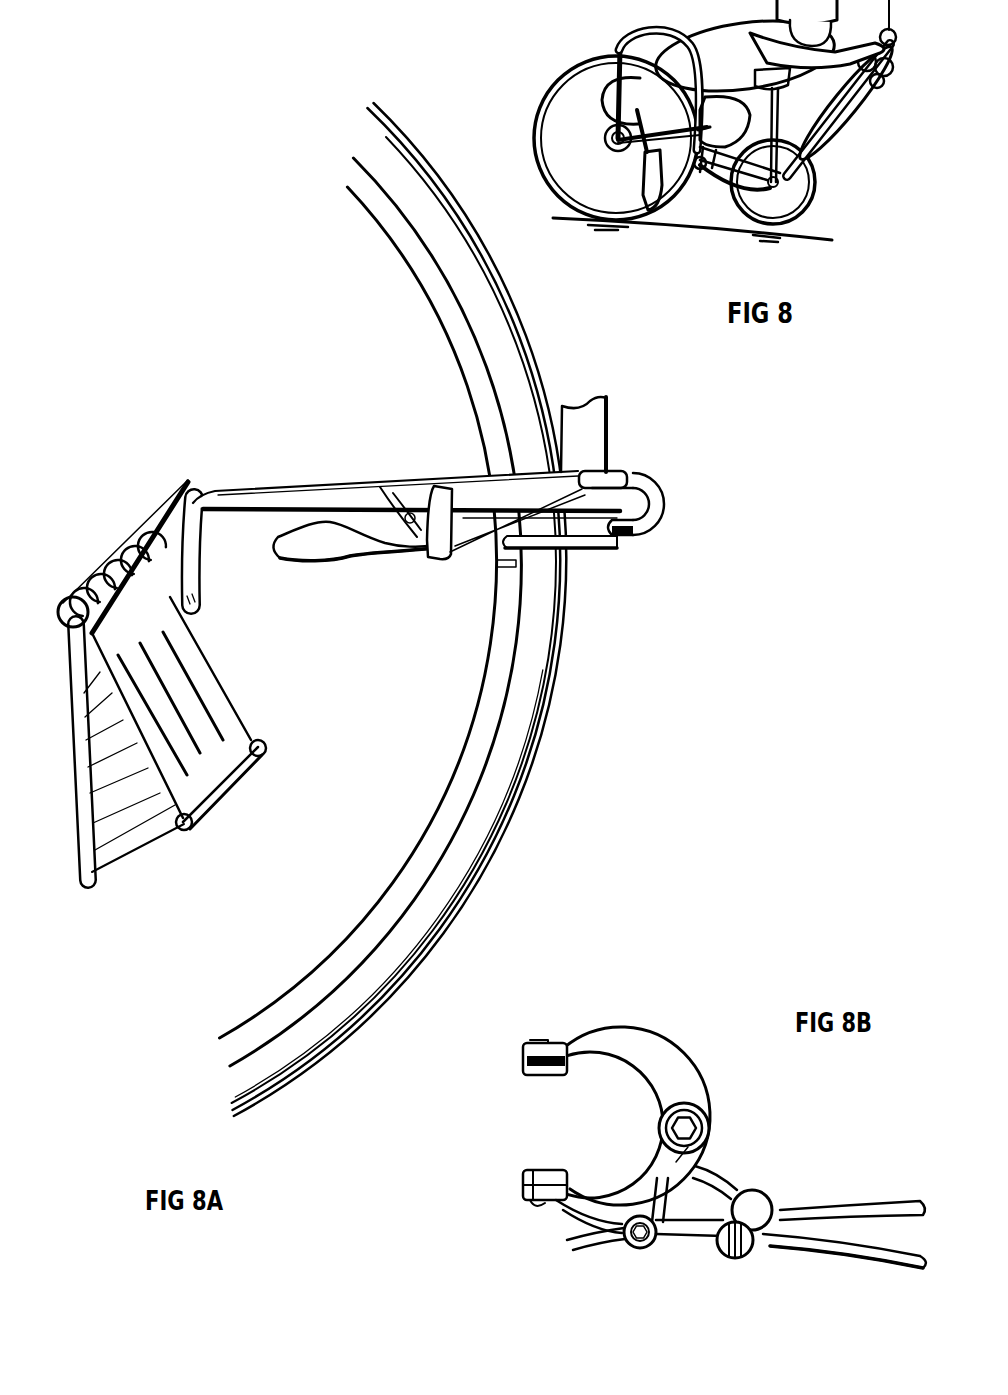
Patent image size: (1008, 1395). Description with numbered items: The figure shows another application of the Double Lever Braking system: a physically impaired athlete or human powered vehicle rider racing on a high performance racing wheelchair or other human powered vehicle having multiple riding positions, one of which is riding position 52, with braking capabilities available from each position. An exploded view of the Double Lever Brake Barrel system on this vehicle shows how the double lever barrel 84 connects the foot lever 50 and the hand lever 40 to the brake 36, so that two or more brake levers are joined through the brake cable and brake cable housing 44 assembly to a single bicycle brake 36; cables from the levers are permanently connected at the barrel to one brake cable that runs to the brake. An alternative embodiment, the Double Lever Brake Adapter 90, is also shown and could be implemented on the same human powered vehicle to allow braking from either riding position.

In FIG. 8A, the brake 36 is at (604, 550).
In FIG. 8B, the brake 36 is at (712, 1103).
In FIG. 8A, the hand lever 40 is at (357, 543).
In FIG. 8A, the brake cable housing 44 is at (660, 502).
In FIG. 8A, the foot lever 50 is at (222, 712).
In FIG. 8, the riding position 52 is at (692, 150).
In FIG. 8A, the double lever barrel 84 is at (630, 472).
In FIG. 8B, the cable adjuster 90 is at (757, 1200).